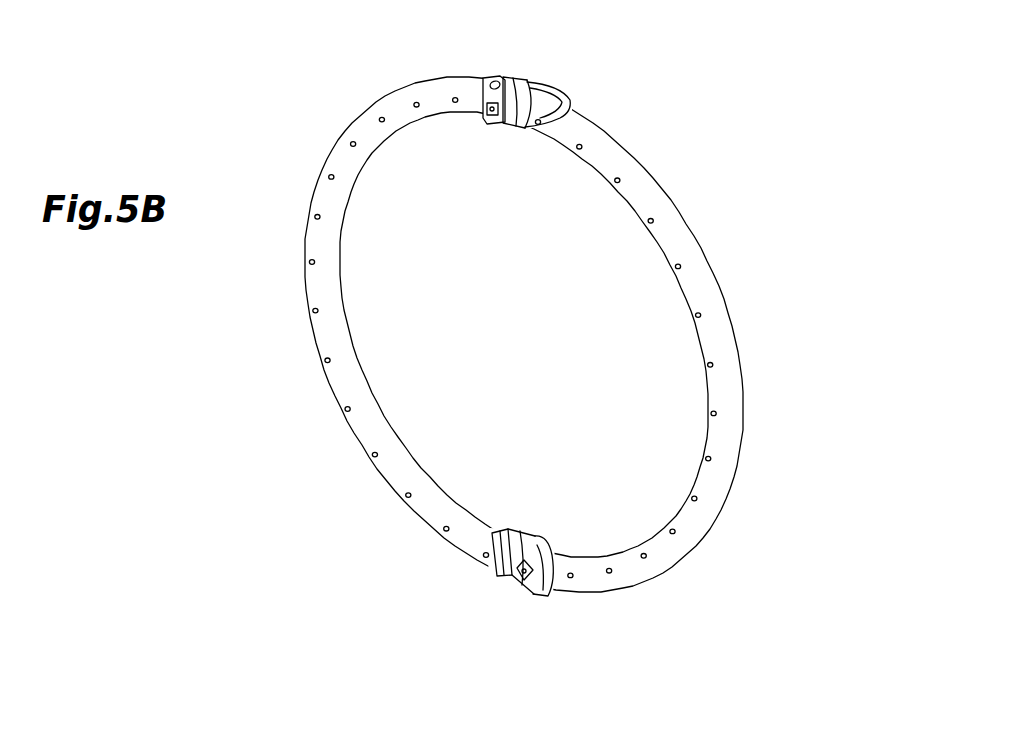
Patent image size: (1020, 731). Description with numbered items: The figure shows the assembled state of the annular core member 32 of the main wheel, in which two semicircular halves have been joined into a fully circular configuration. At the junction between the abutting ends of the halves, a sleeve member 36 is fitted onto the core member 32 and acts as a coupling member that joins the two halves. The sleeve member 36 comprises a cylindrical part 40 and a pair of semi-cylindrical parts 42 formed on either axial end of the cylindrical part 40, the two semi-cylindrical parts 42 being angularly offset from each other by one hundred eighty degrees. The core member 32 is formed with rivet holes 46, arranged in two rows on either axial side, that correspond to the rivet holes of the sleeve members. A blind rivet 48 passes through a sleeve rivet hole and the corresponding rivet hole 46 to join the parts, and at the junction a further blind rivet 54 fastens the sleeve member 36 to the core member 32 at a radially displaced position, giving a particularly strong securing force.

The annular core member 32 is at (612, 122).
The sleeve member 36 is at (526, 74).
The cylindrical part 40 is at (515, 132).
The semi-cylindrical part 42 is at (483, 79).
The rivet hole 46 is at (577, 151).
The blind rivet 48 is at (491, 116).
The blind rivet 54 is at (495, 80).